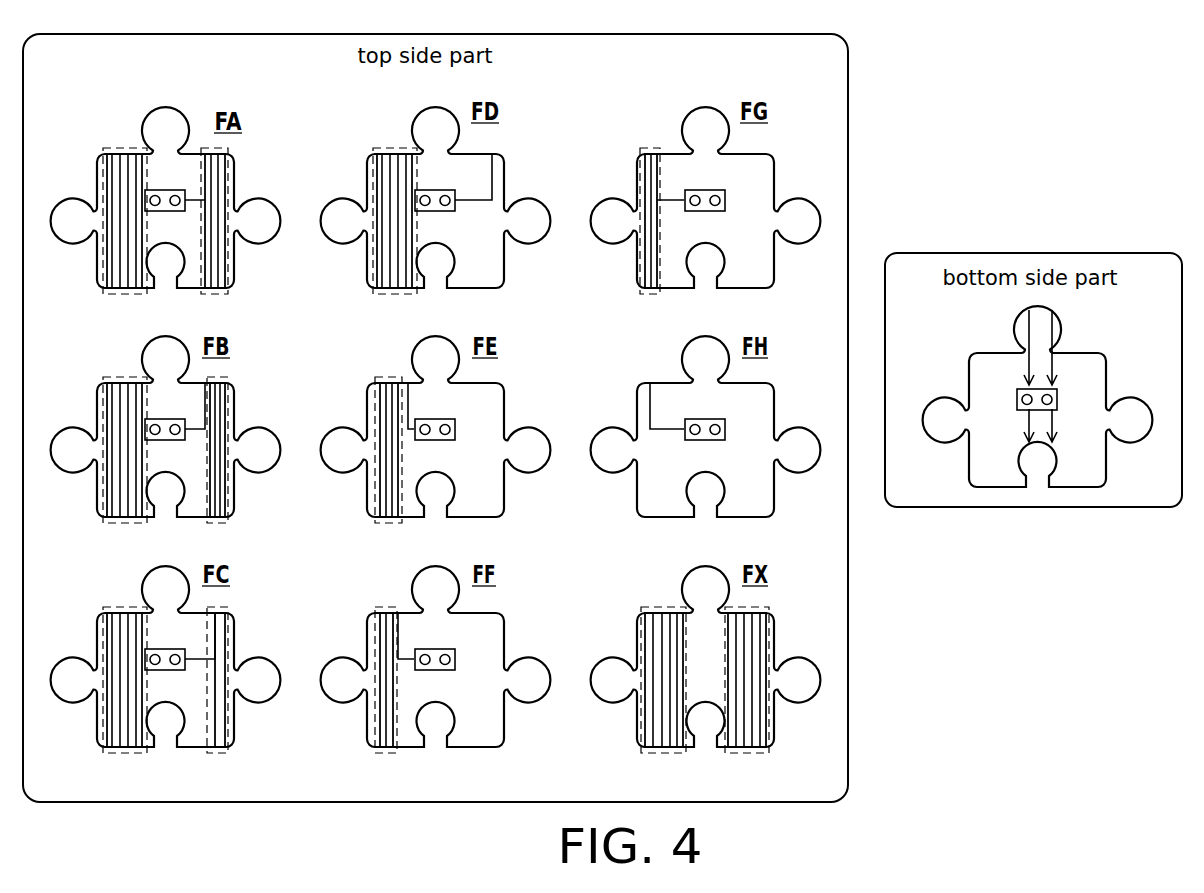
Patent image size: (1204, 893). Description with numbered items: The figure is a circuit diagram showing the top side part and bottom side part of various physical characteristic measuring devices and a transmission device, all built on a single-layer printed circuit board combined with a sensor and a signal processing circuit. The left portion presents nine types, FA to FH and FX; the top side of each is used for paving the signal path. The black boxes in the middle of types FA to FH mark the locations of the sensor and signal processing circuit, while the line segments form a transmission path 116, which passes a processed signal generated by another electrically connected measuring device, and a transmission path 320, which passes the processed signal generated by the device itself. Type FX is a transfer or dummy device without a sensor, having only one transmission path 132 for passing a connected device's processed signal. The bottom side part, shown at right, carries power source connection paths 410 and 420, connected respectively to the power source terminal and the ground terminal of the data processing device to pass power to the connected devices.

The transmission path 116 is at (410, 471).
The transmission path 132 is at (652, 753).
The transmission path 320 is at (430, 363).
The power source connection path 410 is at (1025, 337).
The power source connection path 420 is at (1058, 337).